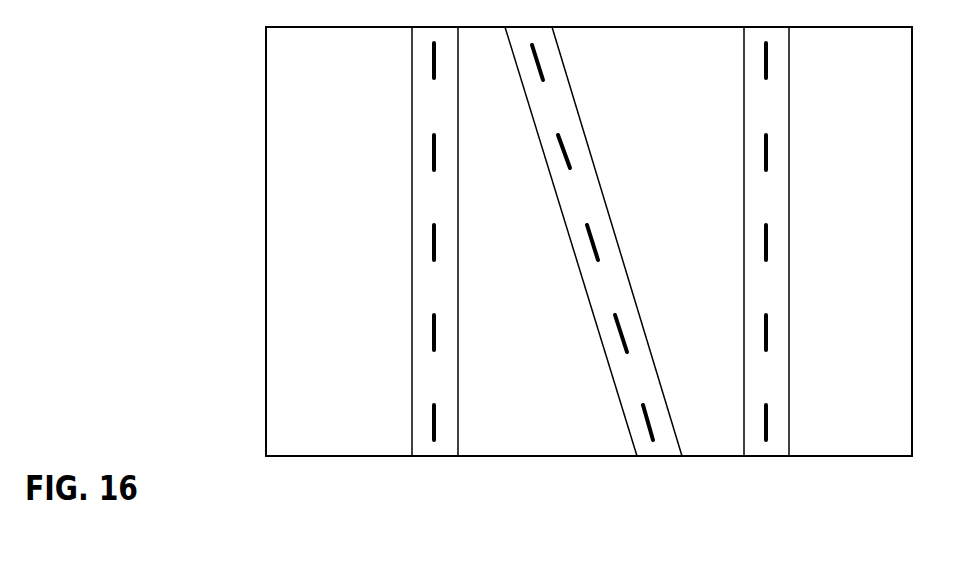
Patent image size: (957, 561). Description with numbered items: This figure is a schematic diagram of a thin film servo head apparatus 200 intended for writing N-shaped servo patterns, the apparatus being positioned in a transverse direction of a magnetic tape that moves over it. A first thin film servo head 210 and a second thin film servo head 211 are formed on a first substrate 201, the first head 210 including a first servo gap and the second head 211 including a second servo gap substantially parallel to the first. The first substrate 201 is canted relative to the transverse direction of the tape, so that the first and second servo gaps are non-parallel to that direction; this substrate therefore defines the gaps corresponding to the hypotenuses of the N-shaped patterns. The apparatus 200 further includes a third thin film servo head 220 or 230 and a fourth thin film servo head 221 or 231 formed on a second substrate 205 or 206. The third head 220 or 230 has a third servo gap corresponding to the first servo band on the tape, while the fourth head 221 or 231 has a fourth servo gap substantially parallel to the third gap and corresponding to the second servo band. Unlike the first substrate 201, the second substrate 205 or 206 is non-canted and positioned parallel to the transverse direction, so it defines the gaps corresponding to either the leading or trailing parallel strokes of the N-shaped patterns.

The thin film servo head apparatus 200 is at (196, 168).
The first substrate 201 is at (648, 449).
The second substrate 205 is at (420, 441).
The second substrate 206 is at (779, 449).
The first thin film servo head 210 is at (540, 65).
The second thin film servo head 211 is at (566, 152).
The third thin film servo head 220 is at (433, 75).
The fourth thin film servo head 221 is at (433, 165).
The third thin film servo head 230 is at (767, 63).
The fourth thin film servo head 231 is at (767, 152).